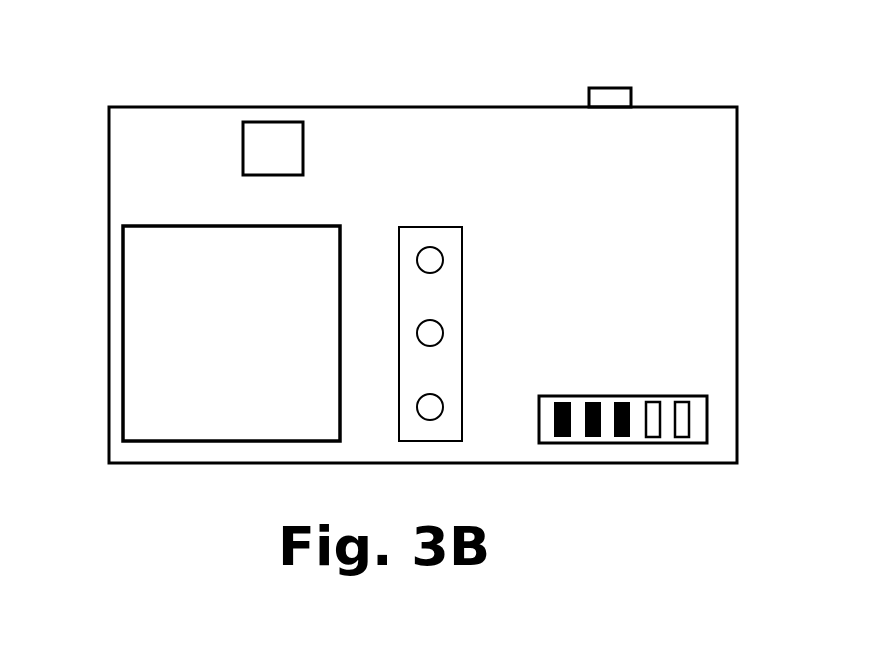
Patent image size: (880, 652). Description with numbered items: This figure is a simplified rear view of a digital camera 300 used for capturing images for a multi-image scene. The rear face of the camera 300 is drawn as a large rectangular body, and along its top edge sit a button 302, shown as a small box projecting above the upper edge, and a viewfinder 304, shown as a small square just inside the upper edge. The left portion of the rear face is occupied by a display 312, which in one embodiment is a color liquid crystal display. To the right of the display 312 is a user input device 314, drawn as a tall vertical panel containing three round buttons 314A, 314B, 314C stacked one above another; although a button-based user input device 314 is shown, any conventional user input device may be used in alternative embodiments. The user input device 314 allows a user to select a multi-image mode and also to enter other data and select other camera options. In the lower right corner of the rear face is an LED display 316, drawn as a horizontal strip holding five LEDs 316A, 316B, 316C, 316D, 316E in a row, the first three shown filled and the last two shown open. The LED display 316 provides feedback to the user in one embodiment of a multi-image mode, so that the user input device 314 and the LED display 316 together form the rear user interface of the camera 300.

The digital camera 300 is at (174, 80).
The button 302 is at (607, 88).
The viewfinder 304 is at (274, 122).
The display 312 is at (123, 325).
The user input device 314 is at (435, 212).
The button 314A is at (444, 260).
The button 314B is at (444, 330).
The button 314C is at (504, 392).
The LED display 316 is at (720, 442).
The LED 316A is at (556, 438).
The LED 316B is at (593, 438).
The LED 316C is at (622, 438).
The LED 316D is at (654, 438).
The LED 316E is at (684, 438).